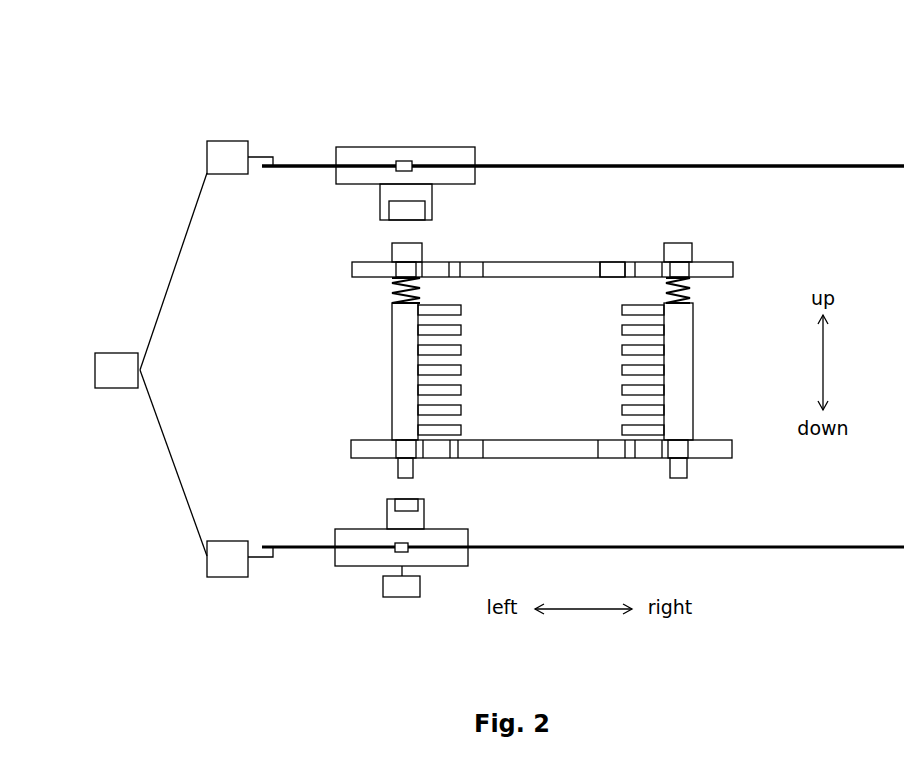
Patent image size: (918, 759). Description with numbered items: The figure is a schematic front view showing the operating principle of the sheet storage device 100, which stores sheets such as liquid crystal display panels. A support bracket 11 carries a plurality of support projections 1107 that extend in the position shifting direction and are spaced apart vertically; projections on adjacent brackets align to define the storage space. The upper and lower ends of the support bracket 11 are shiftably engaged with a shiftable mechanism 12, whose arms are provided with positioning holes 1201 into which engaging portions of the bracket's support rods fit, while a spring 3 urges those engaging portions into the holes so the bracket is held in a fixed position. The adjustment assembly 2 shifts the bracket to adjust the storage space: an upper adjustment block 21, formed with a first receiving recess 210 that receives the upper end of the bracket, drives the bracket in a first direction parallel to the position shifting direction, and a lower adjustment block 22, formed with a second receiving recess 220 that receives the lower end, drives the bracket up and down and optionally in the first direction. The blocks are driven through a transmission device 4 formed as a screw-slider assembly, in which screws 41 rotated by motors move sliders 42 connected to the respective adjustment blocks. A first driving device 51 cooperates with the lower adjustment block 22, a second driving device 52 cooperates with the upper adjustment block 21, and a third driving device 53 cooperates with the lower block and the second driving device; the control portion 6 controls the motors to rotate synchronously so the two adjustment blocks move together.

The sheet storage device 100 is at (683, 82).
The adjustment assembly 2 is at (349, 184).
The upper adjustment block 21 is at (462, 178).
The first receiving recess 210 is at (415, 213).
The lower adjustment block 22 is at (457, 556).
The second receiving recess 220 is at (407, 506).
The spring 3 is at (417, 290).
The transmission device 4 is at (490, 67).
The screw 41 is at (560, 166).
The slider 42 is at (410, 162).
The first driving device 51 is at (401, 581).
The second driving device 52 is at (240, 157).
The third driving device 53 is at (240, 559).
The control portion 6 is at (151, 364).
The support bracket 11 is at (684, 395).
The support projection 1107 is at (648, 350).
The shiftable mechanism 12 is at (714, 270).
The positioning hole 1201 is at (610, 270).